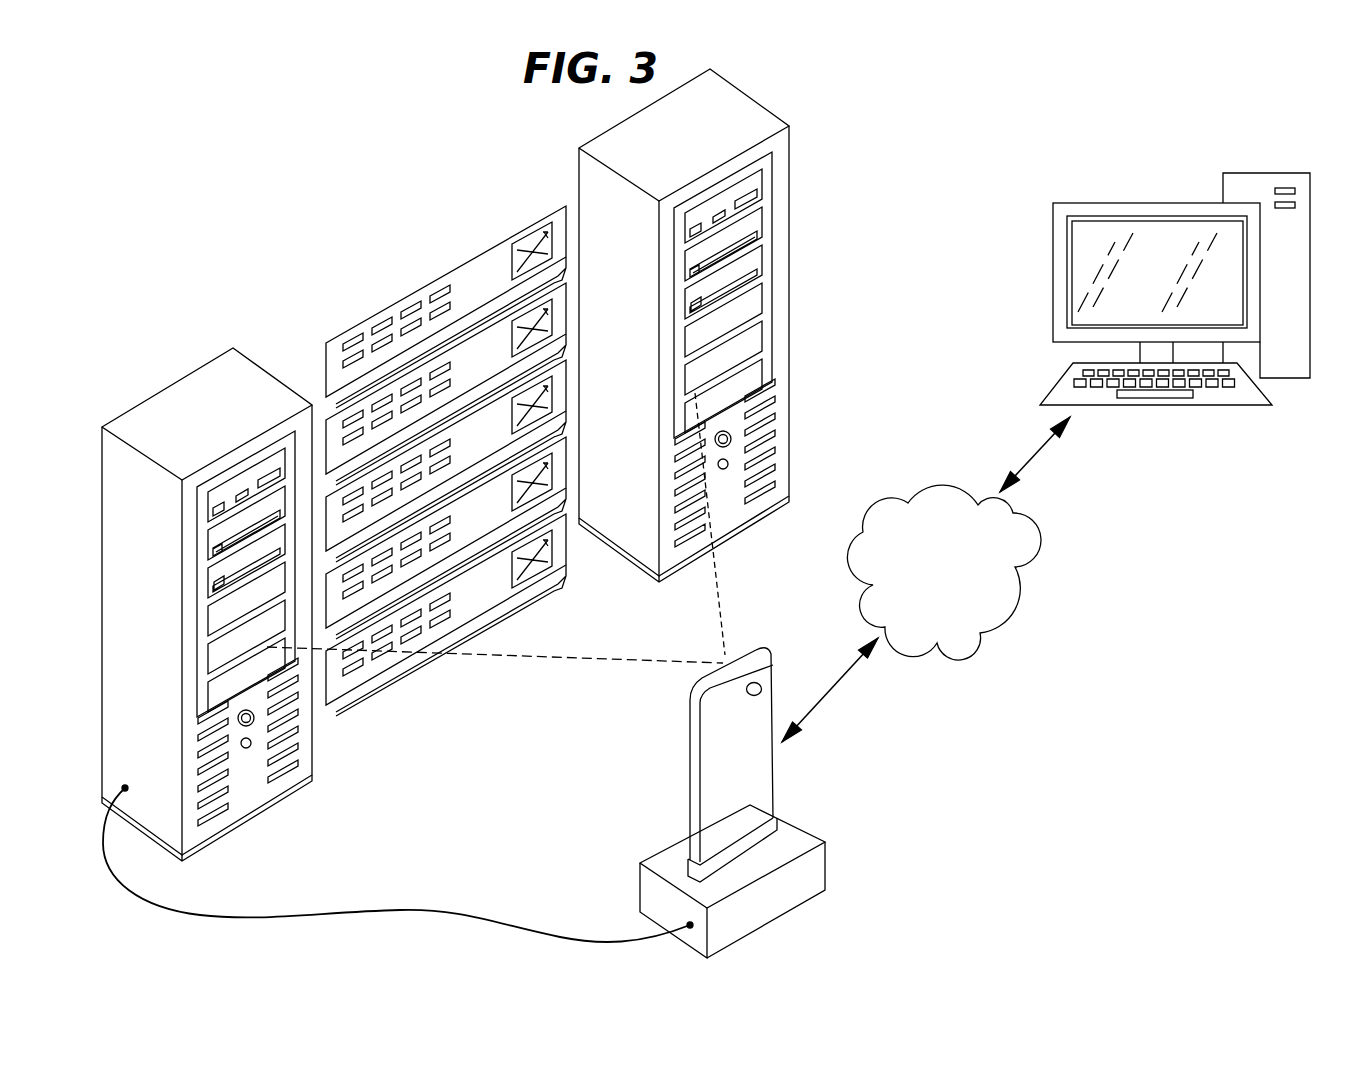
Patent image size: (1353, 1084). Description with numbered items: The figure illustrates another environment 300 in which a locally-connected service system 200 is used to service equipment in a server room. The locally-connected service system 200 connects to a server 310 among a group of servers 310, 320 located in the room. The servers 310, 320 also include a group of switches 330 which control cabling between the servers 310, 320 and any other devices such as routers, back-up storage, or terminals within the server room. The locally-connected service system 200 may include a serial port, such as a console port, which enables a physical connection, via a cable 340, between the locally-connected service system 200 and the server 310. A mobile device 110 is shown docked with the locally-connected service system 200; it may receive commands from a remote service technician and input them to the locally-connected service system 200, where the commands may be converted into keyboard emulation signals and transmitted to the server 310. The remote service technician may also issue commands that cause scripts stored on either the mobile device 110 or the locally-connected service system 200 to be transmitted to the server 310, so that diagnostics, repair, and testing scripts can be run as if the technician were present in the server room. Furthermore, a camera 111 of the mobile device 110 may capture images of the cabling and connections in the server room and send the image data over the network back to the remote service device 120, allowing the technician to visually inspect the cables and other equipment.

The environment 300 is at (1271, 109).
The server 310 is at (146, 400).
The server 320 is at (792, 181).
The switches 330 is at (420, 287).
The remote service device 120 is at (1052, 222).
The mobile device 110 is at (690, 746).
The camera 111 is at (762, 688).
The locally-connected service system 200 is at (826, 862).
The cable 340 is at (287, 915).